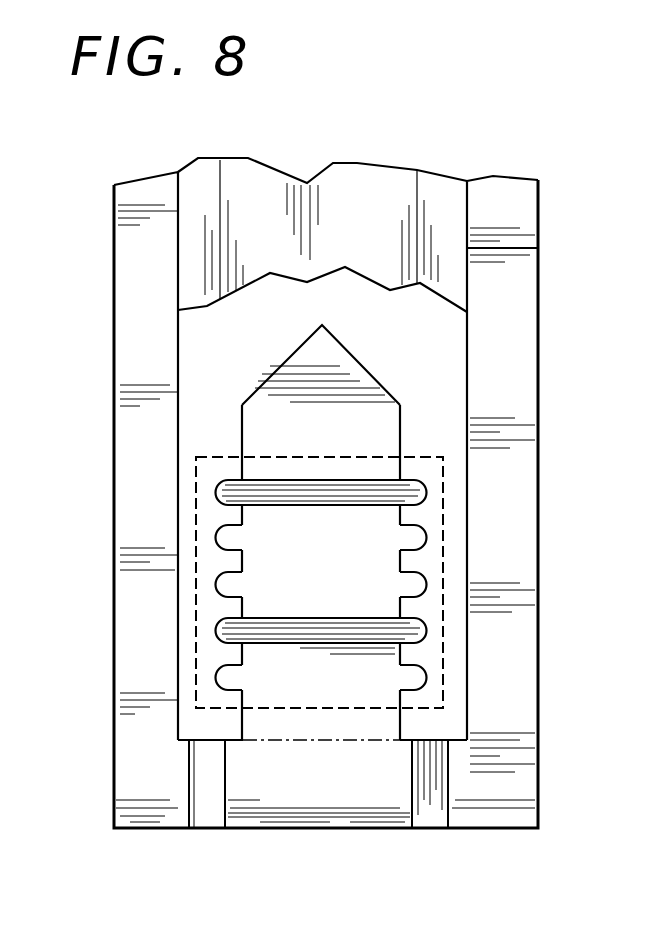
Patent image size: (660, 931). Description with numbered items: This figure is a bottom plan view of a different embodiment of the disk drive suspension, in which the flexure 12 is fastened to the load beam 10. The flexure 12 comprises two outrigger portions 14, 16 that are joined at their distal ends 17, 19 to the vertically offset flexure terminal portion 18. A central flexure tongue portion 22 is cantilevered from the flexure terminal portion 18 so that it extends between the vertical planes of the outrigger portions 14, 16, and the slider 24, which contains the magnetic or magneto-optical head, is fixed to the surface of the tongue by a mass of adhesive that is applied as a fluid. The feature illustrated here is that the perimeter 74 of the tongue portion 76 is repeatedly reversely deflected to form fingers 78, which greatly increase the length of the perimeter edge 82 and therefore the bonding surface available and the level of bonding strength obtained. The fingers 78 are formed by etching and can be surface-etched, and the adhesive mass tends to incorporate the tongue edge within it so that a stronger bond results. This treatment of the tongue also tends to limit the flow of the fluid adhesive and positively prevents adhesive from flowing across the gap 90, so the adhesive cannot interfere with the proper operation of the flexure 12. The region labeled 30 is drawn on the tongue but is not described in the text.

The load beam 10 is at (357, 165).
The flexure 12 is at (551, 363).
The outrigger portion 14 is at (143, 203).
The outrigger portion 16 is at (497, 208).
The distal end 17 is at (152, 817).
The flexure terminal portion 18 is at (318, 815).
The distal end 19 is at (468, 815).
The flexure tongue portion 22 is at (290, 393).
The slider 24 is at (445, 575).
The device body 30 is at (323, 577).
The perimeter 74 is at (417, 530).
The tongue portion 76 is at (375, 607).
The fingers 78 is at (225, 540).
The perimeter edge 82 is at (232, 556).
The gap 90 is at (455, 485).